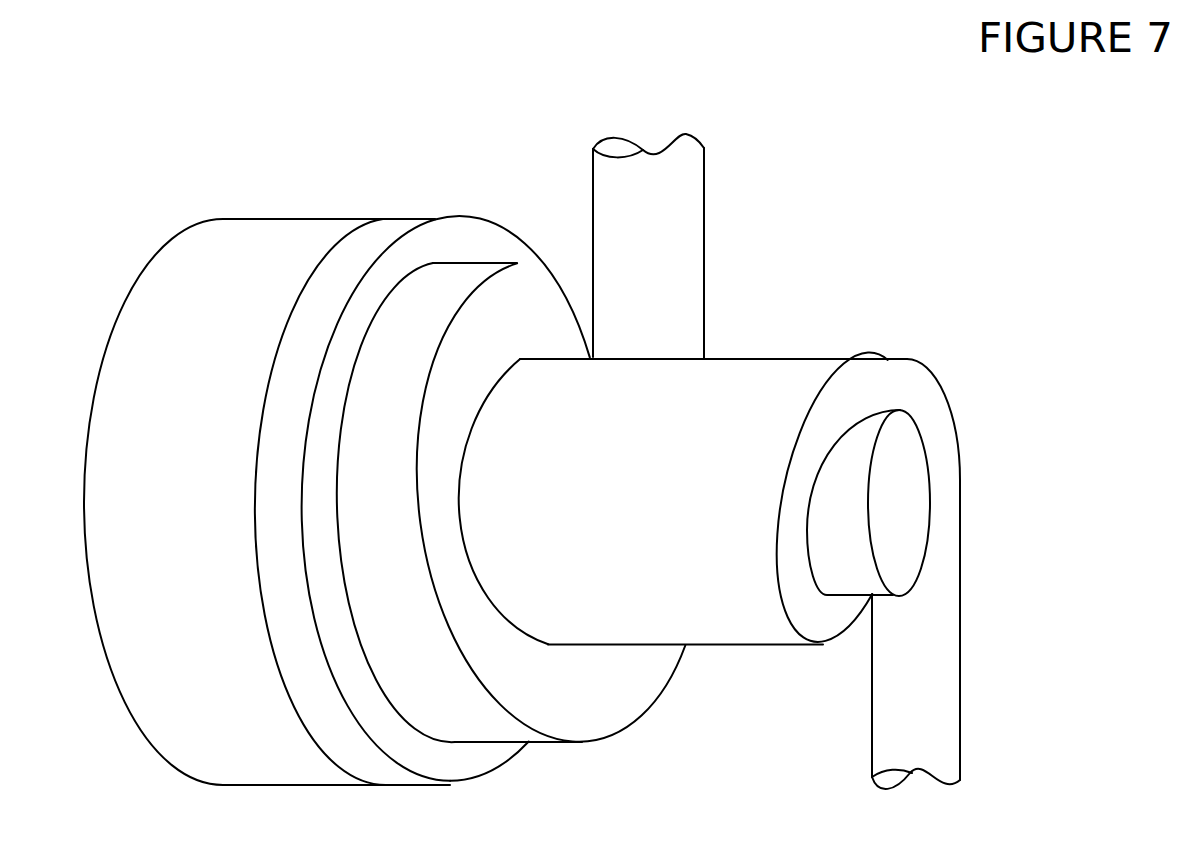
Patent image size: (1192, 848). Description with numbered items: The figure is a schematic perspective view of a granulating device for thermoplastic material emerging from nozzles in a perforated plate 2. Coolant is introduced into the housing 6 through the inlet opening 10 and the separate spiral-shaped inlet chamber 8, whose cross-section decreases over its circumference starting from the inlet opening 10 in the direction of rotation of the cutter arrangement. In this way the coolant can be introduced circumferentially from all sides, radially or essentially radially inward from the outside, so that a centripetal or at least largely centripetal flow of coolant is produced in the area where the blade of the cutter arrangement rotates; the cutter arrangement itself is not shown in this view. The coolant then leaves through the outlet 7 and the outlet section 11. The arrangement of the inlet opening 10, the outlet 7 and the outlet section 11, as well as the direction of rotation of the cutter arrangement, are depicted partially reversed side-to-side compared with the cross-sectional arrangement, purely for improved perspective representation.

The perforated plate 2 is at (485, 240).
The spiral-shaped inlet chamber 8 is at (433, 700).
The housing 6 is at (762, 377).
The outlet section 11 is at (858, 392).
The inlet opening 10 is at (693, 162).
The outlet 7 is at (952, 757).